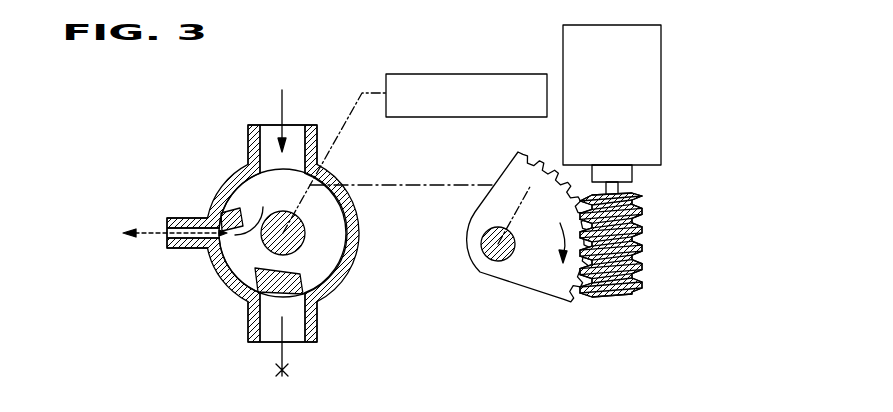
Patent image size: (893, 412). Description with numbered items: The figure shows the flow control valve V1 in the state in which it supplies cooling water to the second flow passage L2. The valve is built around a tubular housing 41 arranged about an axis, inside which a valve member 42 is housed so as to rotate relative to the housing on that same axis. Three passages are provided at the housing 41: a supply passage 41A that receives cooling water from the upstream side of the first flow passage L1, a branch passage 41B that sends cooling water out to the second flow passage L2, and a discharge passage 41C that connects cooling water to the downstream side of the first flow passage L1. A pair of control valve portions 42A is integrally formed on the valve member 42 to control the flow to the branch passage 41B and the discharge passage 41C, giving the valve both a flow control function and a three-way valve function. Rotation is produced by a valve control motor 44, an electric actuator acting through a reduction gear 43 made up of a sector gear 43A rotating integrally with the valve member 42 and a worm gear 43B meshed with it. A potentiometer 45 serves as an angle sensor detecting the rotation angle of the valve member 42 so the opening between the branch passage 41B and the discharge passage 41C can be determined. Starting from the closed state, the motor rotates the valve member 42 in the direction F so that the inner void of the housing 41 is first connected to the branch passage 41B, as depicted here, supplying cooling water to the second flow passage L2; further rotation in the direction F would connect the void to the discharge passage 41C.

The flow control valve V1 is at (259, 222).
The housing 41 is at (362, 232).
The supply passage 41A is at (247, 152).
The branch passage 41B is at (188, 250).
The discharge passage 41C is at (247, 323).
The valve member 42 is at (330, 247).
The control valve portions 42A is at (220, 222).
The reduction gear 43 is at (593, 243).
The sector gear 43A is at (532, 283).
The worm gear 43B is at (642, 228).
The valve control motor 44 is at (658, 75).
The potentiometer 45 is at (463, 72).
The first flow passage L1 is at (284, 110).
The second flow passage L2 is at (153, 228).
The direction F is at (555, 243).